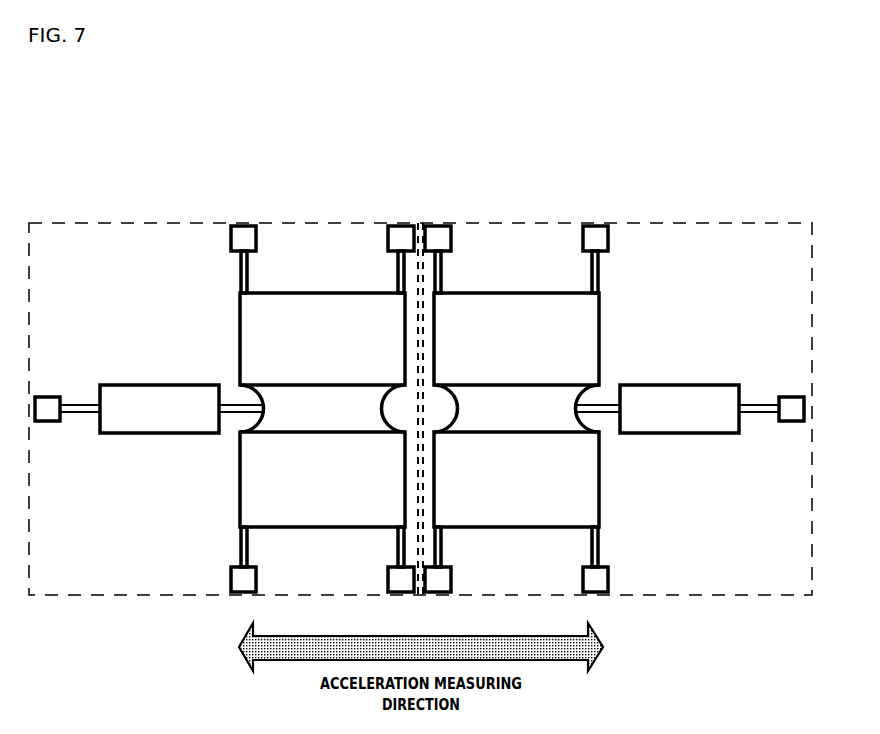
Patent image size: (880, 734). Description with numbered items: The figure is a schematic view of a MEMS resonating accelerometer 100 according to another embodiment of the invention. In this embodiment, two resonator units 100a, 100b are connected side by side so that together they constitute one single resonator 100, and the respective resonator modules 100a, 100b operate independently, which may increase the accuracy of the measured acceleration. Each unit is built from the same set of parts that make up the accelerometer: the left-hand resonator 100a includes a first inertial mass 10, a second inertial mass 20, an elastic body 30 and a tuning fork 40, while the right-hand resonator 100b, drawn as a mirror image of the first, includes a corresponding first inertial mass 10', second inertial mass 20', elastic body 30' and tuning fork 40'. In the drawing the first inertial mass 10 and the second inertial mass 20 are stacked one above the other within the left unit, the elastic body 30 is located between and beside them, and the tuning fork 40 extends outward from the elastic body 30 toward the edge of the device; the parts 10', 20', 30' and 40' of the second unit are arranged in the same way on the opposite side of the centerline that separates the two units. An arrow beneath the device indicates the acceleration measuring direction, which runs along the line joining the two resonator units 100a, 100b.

The MEMS resonating accelerometer 100 is at (465, 152).
The resonator 100a is at (369, 222).
The resonator 100b is at (464, 222).
The first inertial mass 10 is at (322, 311).
The first inertial mass 10' is at (516, 311).
The second inertial mass 20 is at (322, 508).
The second inertial mass 20' is at (516, 508).
The elastic body 30 is at (295, 440).
The elastic body 30' is at (552, 439).
The tuning fork 40 is at (159, 383).
The tuning fork 40' is at (679, 383).